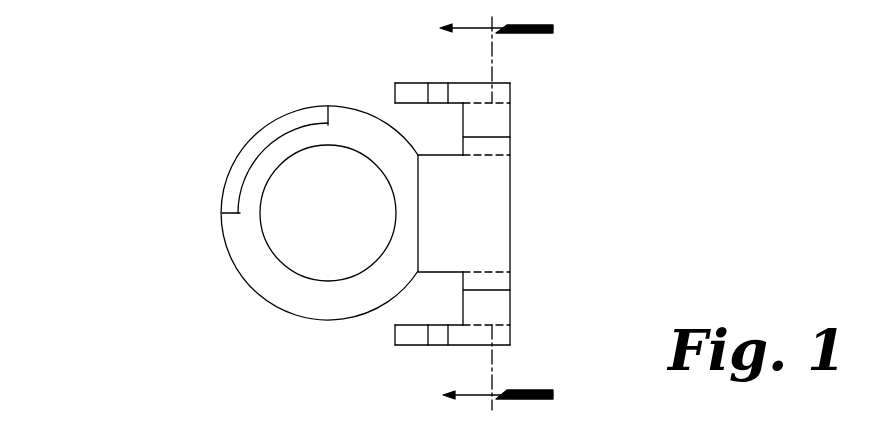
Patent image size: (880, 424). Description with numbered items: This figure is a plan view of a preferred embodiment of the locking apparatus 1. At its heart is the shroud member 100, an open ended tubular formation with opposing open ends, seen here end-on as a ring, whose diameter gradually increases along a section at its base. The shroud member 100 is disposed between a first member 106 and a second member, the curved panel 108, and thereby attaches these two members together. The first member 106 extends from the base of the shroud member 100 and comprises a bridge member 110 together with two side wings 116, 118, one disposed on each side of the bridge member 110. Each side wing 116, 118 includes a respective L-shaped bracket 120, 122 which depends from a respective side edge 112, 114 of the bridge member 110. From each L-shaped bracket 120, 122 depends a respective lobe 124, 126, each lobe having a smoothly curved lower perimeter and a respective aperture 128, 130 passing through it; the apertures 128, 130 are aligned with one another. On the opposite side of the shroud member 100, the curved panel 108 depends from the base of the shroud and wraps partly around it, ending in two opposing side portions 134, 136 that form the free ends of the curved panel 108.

The connector assembly 1 is at (80, 116).
The shroud member 100 is at (260, 302).
The first member 106 is at (510, 212).
The curved panel 108 is at (260, 176).
The bridge member 110 is at (512, 206).
The side edge 112 is at (512, 153).
The side edge 114 is at (512, 272).
The side wing 116 is at (472, 64).
The side wing 118 is at (462, 362).
The L-shaped bracket 120 is at (495, 137).
The L-shaped bracket 122 is at (497, 302).
The lobe 124 is at (395, 90).
The lobe 126 is at (395, 333).
The aperture 128 is at (440, 347).
The aperture 130 is at (433, 83).
The side portion 134 is at (231, 224).
The side portion 136 is at (345, 112).